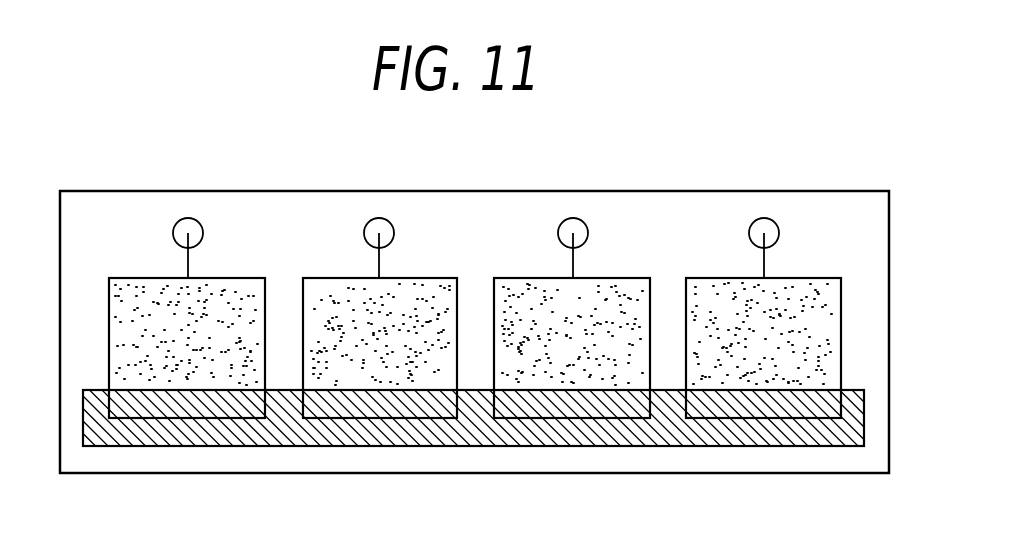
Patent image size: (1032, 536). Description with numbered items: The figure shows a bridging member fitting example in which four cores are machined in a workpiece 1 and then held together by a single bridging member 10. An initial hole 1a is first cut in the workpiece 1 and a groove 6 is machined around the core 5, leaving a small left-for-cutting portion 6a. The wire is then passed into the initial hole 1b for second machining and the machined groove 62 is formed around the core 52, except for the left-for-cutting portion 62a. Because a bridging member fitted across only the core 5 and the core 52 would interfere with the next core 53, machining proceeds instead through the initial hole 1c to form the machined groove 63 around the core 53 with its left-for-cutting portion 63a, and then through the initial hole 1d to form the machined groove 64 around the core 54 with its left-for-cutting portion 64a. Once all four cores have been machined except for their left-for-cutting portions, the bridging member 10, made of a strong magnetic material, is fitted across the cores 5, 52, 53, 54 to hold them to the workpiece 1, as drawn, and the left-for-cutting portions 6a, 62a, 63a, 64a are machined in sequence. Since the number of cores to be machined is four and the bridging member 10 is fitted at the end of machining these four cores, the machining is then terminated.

The workpiece 1 is at (655, 473).
The initial hole 1a is at (195, 218).
The initial hole for second machining 1b is at (387, 218).
The initial hole for third machining 1c is at (581, 218).
The initial hole for fourth machining 1d is at (770, 218).
The core 5 is at (155, 298).
The groove 6 is at (132, 278).
The left-for-cutting portion 6a is at (235, 278).
The bridging member 10 is at (538, 446).
The core for the second machining 52 is at (337, 295).
The machined groove for the second machining 62 is at (350, 278).
The left-for-cutting portion for the second machining 62a is at (420, 278).
The core for the third machining 53 is at (537, 298).
The machined groove for the third machining 63 is at (545, 278).
The left-for-cutting portion for the third machining 63a is at (622, 278).
The core for the fourth machining 54 is at (715, 293).
The machined groove for the fourth machining 64 is at (733, 278).
The left-for-cutting portion for the fourth machining 64a is at (817, 278).